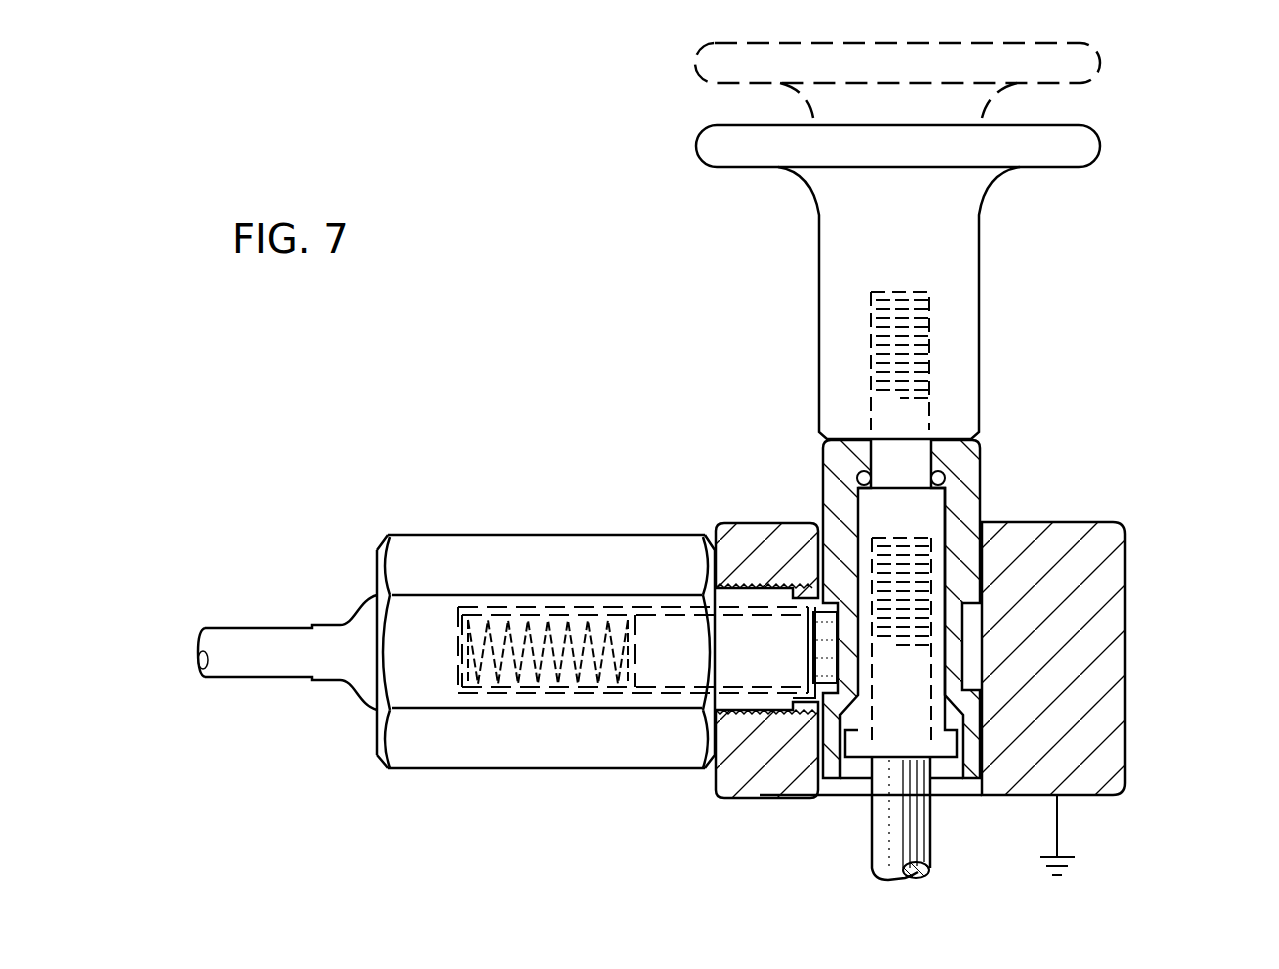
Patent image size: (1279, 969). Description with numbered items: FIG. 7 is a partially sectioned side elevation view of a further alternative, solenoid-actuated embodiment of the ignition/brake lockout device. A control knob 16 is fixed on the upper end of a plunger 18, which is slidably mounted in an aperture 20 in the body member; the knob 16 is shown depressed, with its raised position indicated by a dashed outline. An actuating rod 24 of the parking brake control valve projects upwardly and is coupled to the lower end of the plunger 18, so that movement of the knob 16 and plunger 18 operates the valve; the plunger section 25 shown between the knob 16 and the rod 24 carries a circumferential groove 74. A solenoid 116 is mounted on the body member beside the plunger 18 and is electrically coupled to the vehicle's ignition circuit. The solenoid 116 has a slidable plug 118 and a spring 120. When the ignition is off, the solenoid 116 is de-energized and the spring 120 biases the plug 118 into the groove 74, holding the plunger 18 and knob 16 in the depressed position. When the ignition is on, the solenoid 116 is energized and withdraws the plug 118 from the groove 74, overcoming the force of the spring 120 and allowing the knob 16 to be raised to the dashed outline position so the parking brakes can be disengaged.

The control knob 16 is at (1112, 152).
The plunger 18 is at (812, 465).
The aperture 20 is at (826, 545).
The actuating rod 24 is at (880, 815).
The plunger 25 is at (924, 510).
The circumferential groove 74 is at (967, 657).
The solenoid 116 is at (465, 527).
The slidable plug 118 is at (673, 630).
The spring 120 is at (538, 683).